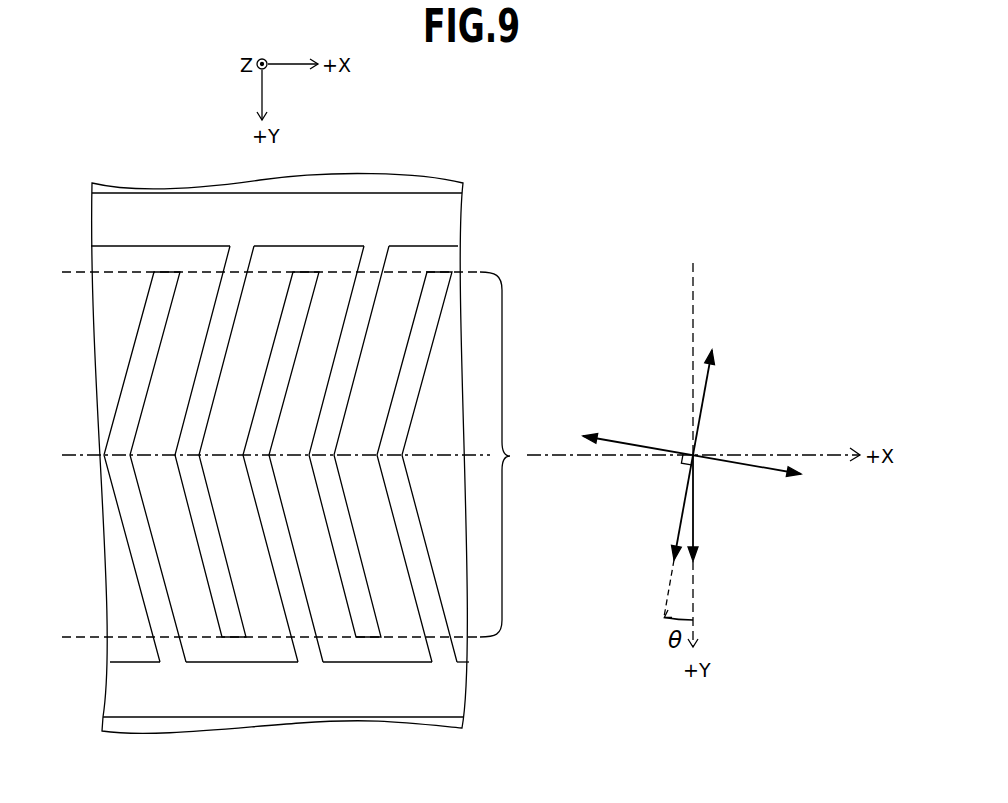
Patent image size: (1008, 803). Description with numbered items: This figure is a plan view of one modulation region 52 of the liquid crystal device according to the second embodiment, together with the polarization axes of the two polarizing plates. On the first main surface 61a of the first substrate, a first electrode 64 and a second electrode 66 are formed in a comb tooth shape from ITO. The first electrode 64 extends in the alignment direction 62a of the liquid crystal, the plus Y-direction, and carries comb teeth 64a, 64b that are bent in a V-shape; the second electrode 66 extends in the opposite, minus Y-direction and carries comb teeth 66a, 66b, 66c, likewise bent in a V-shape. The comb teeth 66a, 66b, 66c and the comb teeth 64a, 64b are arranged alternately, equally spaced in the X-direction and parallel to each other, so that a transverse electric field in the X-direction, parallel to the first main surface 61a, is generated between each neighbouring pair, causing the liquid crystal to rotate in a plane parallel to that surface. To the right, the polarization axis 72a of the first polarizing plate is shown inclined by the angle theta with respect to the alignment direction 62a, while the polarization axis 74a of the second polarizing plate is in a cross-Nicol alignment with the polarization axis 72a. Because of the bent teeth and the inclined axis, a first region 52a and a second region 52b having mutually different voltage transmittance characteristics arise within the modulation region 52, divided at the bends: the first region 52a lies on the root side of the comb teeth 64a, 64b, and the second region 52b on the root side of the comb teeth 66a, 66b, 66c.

The modulation region 52 is at (441, 147).
The first region 52a is at (306, 363).
The second region 52b is at (306, 587).
The first main surface 61a is at (112, 332).
The first electrode 64 is at (217, 193).
The comb tooth 64a is at (190, 393).
The comb tooth 64b is at (325, 392).
The second electrode 66 is at (200, 718).
The comb tooth 66a is at (138, 584).
The comb tooth 66b is at (262, 543).
The comb tooth 66c is at (398, 538).
The polarization axis 72a is at (707, 378).
The polarization axis 74a is at (634, 444).
The alignment direction 62a is at (695, 543).